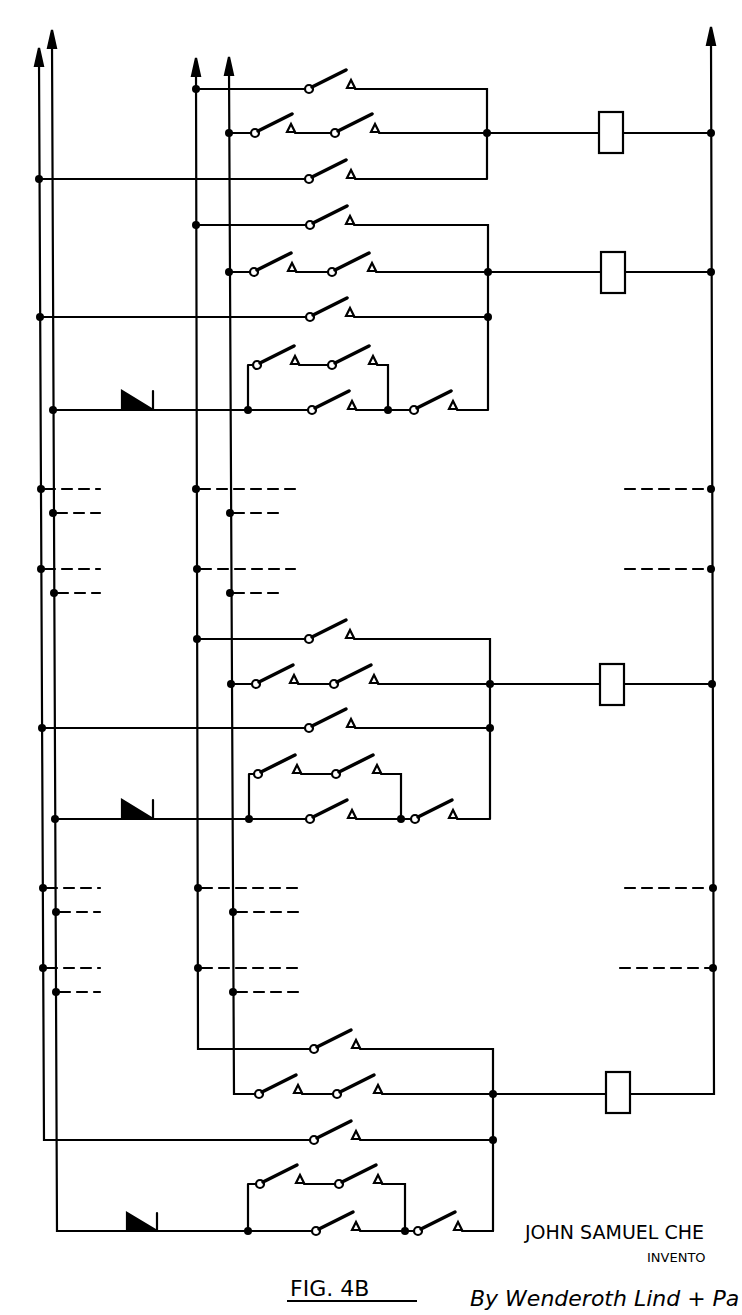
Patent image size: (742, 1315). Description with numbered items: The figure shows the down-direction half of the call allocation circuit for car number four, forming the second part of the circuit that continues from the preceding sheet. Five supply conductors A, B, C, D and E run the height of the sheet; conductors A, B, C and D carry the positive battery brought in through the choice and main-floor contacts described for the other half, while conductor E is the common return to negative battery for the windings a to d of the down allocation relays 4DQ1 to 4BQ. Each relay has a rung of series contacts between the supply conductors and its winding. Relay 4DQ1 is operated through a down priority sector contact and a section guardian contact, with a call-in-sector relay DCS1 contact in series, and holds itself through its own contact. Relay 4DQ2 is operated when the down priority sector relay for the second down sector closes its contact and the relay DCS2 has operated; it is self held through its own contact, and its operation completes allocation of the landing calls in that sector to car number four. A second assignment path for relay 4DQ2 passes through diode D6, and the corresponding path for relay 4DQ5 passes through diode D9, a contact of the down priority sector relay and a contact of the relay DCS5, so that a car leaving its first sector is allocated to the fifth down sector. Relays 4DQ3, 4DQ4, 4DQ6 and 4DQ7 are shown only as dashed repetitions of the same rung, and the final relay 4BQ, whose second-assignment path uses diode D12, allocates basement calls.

The supply bus A is at (260, 586).
The supply bus B is at (270, 630).
The supply bus C is at (338, 635).
The supply bus D is at (412, 564).
The return bus E is at (681, 560).
The down allocation relay 4DQ1 is at (610, 120).
The down allocation relay 4DQ2 is at (610, 260).
The down allocation relay 4DQ3 is at (635, 487).
The down allocation relay 4DQ4 is at (636, 567).
The down allocation relay 4DQ5 is at (610, 672).
The down allocation relay 4DQ6 is at (636, 885).
The down allocation relay 4DQ7 is at (636, 966).
The basement allocation relay 4BQ is at (617, 1078).
The diode D6 is at (137, 414).
The diode D9 is at (137, 823).
The diode D12 is at (143, 1236).
The down call in sector relay DCS1 is at (263, 123).
The down call in sector relay DCS2 is at (344, 331).
The down call in sector relay DCS5 is at (345, 741).